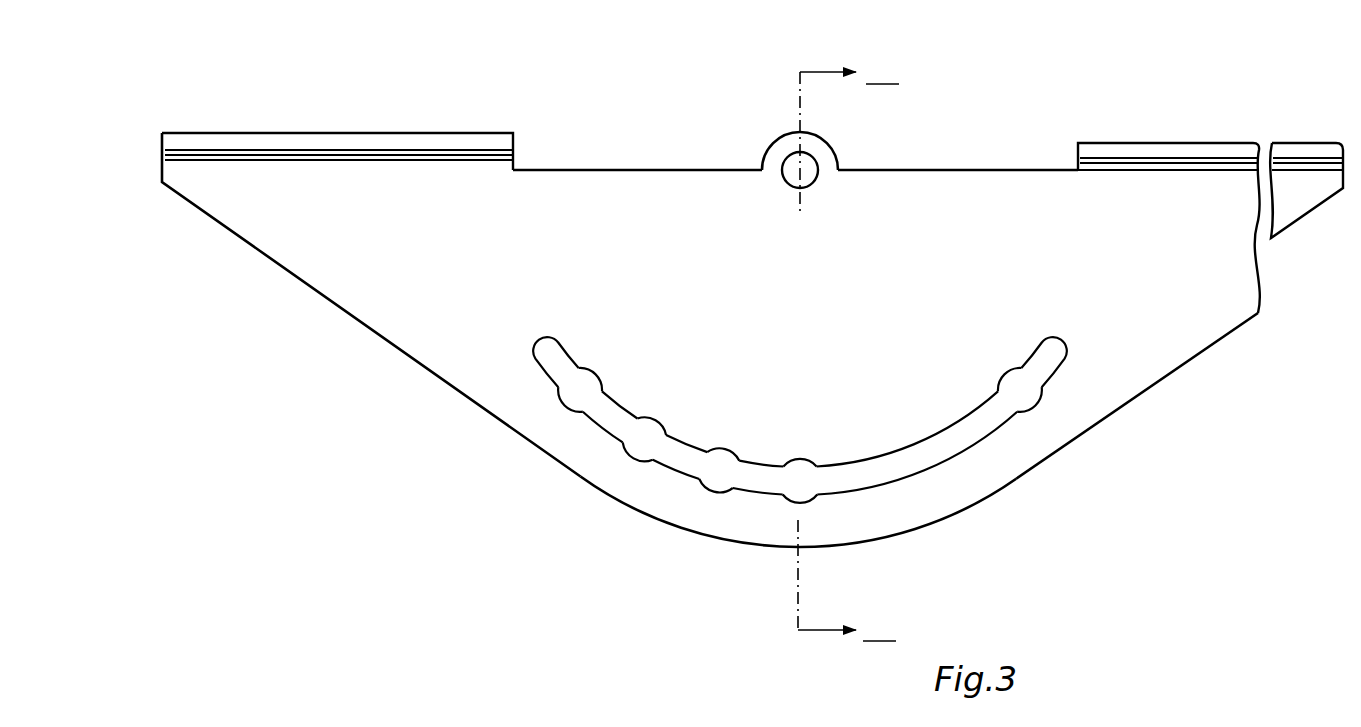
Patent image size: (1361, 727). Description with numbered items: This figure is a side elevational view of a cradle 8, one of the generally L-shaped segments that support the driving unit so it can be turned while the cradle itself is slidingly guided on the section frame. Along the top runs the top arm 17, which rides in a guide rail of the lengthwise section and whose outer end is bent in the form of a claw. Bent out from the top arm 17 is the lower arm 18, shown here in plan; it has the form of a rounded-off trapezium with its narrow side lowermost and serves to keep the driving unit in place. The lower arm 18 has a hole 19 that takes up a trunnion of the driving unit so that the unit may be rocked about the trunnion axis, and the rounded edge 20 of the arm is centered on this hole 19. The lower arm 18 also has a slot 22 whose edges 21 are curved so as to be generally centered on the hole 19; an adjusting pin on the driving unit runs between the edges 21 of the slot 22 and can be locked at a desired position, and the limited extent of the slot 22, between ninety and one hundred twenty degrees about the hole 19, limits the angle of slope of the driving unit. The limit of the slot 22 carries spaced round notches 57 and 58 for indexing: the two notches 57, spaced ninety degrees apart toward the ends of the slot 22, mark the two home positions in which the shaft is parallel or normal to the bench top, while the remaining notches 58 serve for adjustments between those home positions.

The cradle 8 is at (934, 138).
The top arm 17 is at (362, 147).
The lower arm 18 is at (711, 372).
The hole 19 is at (790, 167).
The rounded edge 20 is at (888, 538).
The edges 21 is at (836, 464).
The slot 22 is at (921, 461).
The notches 57 is at (560, 406).
The notches 58 is at (780, 503).